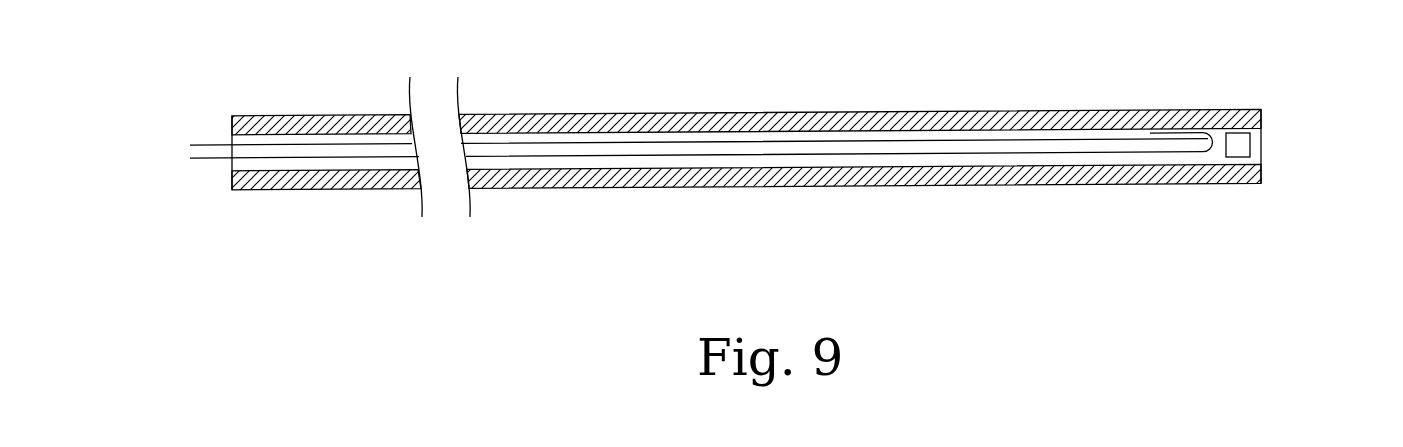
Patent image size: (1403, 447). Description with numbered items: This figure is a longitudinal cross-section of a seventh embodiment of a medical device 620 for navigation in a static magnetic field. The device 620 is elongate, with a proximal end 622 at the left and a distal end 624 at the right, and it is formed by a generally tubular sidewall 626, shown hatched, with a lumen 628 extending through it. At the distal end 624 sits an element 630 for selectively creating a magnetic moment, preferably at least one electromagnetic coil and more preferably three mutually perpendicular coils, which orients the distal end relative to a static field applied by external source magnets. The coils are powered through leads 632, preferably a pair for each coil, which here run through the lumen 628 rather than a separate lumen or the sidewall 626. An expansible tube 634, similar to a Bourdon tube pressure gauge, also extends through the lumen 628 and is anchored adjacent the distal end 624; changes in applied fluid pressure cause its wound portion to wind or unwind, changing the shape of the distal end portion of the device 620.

The medical device 620 is at (868, 267).
The proximal end 622 is at (212, 199).
The distal end 624 is at (1285, 107).
The tubular sidewall 626 is at (866, 111).
The lumen 628 is at (701, 155).
The element for selectively creating a magnetic moment 630 is at (1238, 150).
The leads 632 is at (1067, 139).
The expansible tube 634 is at (1067, 154).